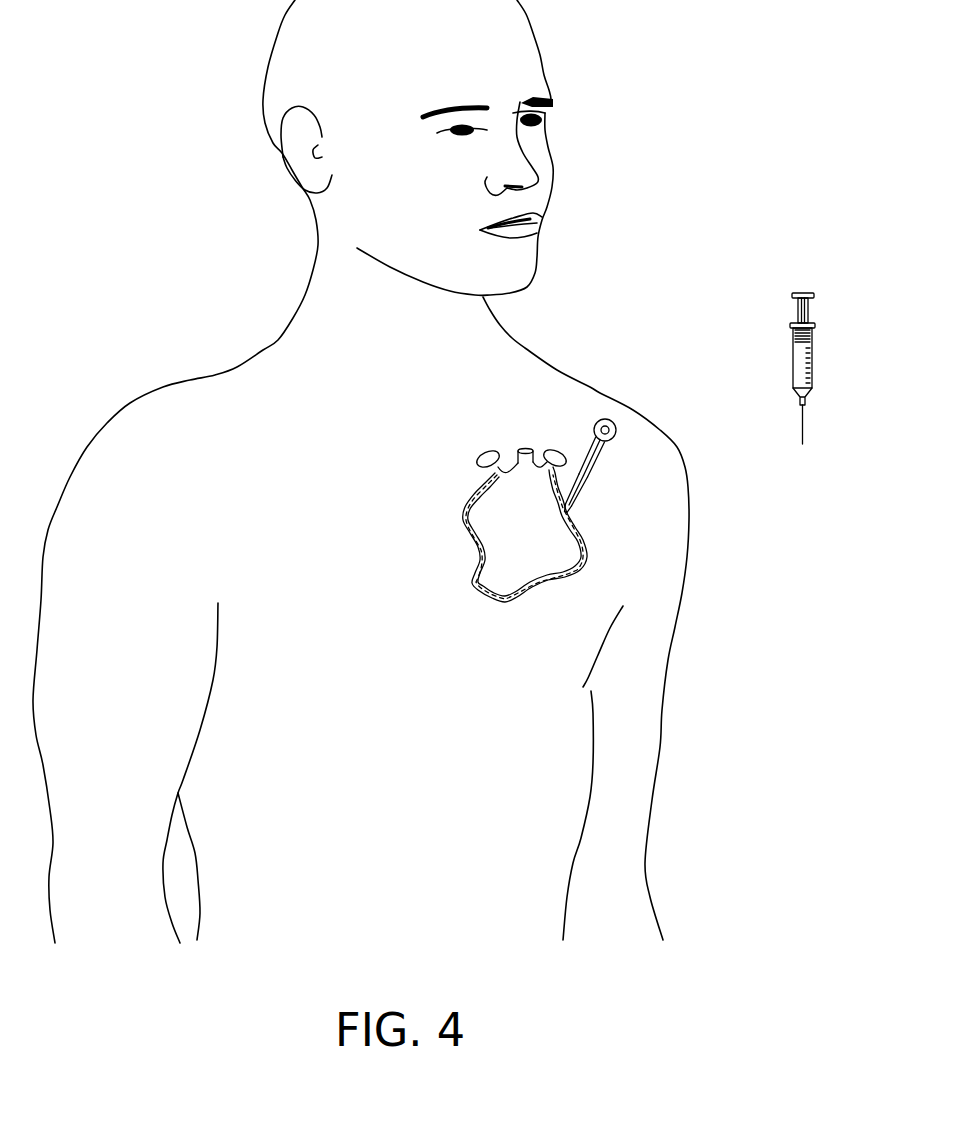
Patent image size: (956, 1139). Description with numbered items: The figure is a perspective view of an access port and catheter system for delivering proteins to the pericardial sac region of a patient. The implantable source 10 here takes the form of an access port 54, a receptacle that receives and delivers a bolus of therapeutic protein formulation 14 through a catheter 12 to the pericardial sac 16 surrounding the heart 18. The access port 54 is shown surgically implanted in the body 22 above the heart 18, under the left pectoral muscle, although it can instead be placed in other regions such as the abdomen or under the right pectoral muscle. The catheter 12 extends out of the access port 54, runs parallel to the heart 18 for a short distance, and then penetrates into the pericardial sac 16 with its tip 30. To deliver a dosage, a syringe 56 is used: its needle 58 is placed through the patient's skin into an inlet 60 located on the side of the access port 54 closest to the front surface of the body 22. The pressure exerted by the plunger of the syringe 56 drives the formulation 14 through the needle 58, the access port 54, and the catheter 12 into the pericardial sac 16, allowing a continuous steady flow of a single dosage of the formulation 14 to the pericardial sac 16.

The implantable source 10 is at (525, 457).
The catheter 12 is at (580, 493).
The therapeutic protein formulation 14 is at (600, 452).
The pericardial sac 16 is at (511, 620).
The heart 18 is at (545, 542).
The body 22 is at (238, 367).
The tip 30 is at (572, 511).
The access port 54 is at (576, 430).
The syringe 56 is at (833, 351).
The needle 58 is at (824, 429).
The inlet 60 is at (617, 433).